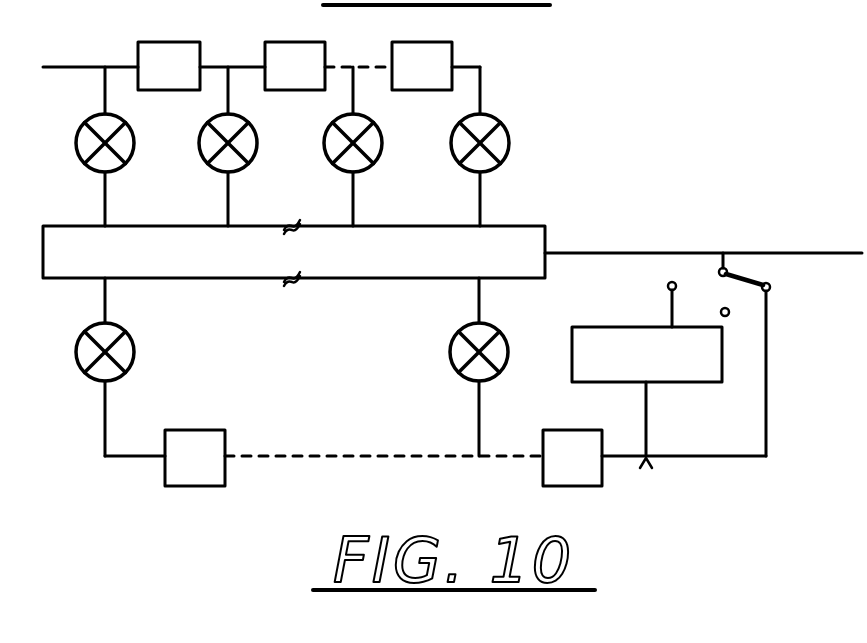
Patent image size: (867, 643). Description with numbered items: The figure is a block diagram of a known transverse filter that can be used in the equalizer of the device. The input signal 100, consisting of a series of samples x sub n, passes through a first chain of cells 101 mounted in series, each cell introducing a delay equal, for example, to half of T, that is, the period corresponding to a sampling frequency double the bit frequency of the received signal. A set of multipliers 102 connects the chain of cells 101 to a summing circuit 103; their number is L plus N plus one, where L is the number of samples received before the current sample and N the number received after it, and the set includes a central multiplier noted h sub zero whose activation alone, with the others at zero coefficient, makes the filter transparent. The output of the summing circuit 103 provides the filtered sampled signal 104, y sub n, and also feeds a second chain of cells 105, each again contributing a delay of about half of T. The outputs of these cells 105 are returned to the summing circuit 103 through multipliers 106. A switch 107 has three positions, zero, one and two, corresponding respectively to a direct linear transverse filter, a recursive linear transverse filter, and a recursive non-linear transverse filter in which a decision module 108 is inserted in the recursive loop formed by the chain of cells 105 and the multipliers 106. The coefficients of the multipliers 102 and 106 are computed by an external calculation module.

The input signal 100 is at (100, 64).
The first chain of cells 101 is at (390, 43).
The multipliers 102 is at (205, 127).
The summing circuit 103 is at (515, 237).
The filtered sampled signal 104 is at (768, 249).
The chain of cells 105 is at (543, 475).
The multipliers 106 is at (442, 352).
The switch 107 is at (750, 279).
The decision module 108 is at (632, 335).